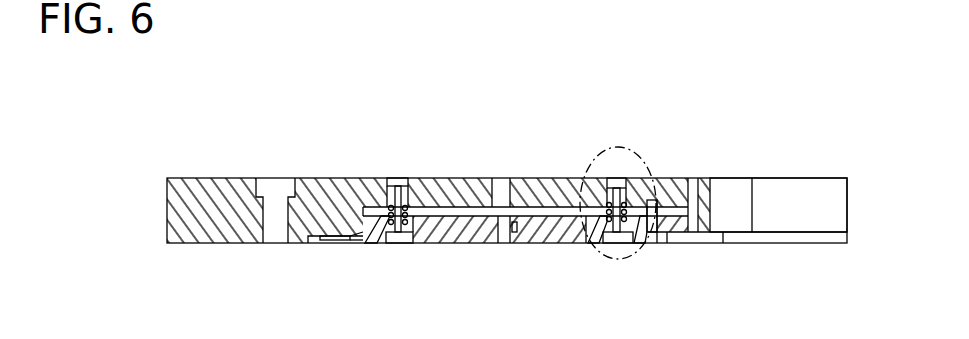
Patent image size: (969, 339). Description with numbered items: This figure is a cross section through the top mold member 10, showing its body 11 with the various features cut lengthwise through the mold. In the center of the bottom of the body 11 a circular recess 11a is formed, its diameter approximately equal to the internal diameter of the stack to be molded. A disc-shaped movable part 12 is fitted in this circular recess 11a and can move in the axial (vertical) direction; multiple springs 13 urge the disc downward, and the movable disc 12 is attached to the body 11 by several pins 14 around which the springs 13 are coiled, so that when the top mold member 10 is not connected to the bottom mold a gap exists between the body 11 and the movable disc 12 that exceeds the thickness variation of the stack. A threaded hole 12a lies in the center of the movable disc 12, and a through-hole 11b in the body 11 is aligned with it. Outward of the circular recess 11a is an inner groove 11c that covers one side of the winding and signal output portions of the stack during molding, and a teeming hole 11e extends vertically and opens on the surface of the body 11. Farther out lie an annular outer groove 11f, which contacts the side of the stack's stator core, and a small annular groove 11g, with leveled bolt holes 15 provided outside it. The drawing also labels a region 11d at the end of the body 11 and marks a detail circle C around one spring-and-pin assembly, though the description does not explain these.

The top mold member 10 is at (783, 132).
The body 11 is at (221, 245).
The circular recess 11a is at (355, 245).
The through-hole 11b is at (500, 182).
The inner groove 11c is at (333, 245).
The end box portion of plate 11d is at (817, 197).
The teeming hole 11e is at (693, 178).
The annular outer groove 11f is at (323, 245).
The small annular groove 11g is at (305, 245).
The movable part 12 is at (438, 245).
The threaded hole 12a is at (505, 245).
The springs 13 is at (366, 178).
The pins 14 is at (387, 245).
The leveled bolt holes 15 is at (278, 183).
The detail circle C is at (618, 176).